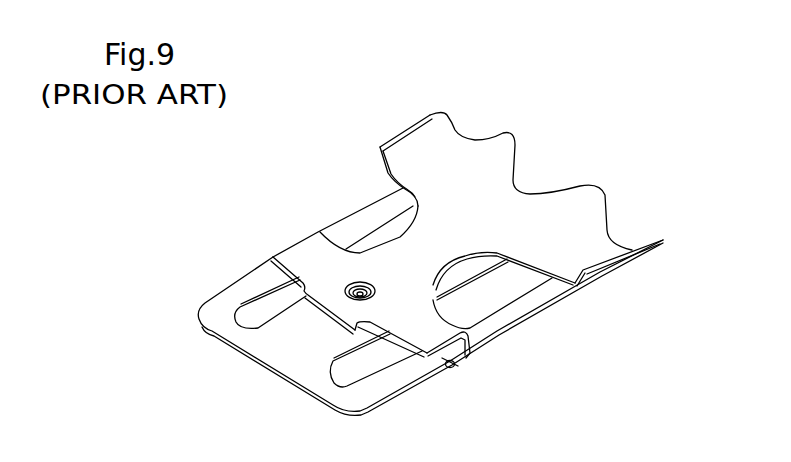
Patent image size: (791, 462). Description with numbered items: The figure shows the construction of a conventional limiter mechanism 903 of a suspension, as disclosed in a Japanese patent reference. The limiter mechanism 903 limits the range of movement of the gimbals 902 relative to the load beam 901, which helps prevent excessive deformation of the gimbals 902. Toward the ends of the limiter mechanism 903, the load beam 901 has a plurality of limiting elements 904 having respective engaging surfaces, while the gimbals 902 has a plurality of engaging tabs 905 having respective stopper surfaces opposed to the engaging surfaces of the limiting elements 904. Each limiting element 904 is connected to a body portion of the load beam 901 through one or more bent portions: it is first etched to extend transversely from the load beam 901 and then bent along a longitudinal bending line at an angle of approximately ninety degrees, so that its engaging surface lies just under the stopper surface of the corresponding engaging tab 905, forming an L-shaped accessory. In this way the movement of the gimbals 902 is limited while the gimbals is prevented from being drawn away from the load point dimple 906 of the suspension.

The load beam 901 is at (597, 202).
The gimbals 902 is at (548, 290).
The limiter mechanism 903 is at (300, 184).
The limiting element 904 is at (463, 328).
The engaging tab 905 is at (455, 364).
The load point dimple 906 is at (347, 300).